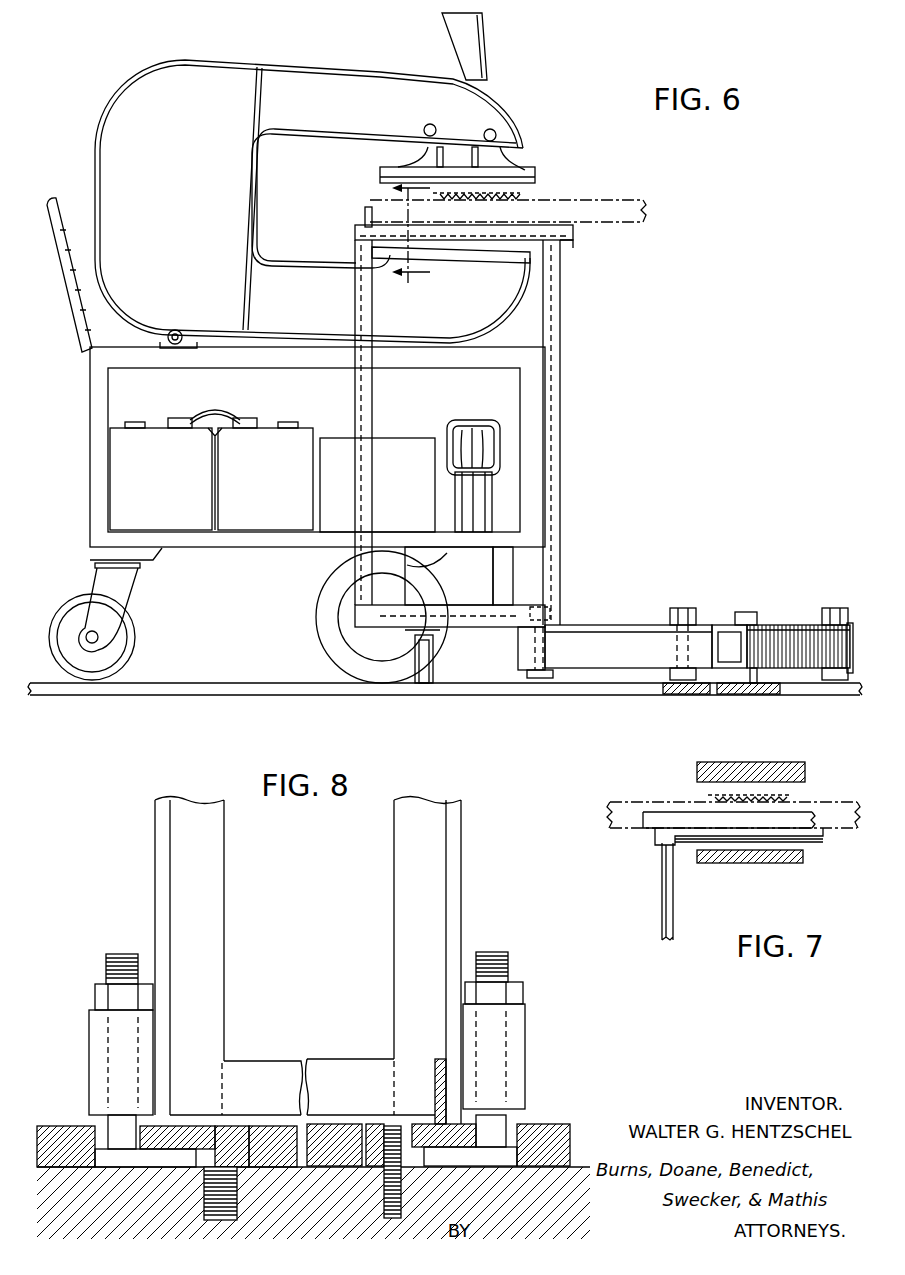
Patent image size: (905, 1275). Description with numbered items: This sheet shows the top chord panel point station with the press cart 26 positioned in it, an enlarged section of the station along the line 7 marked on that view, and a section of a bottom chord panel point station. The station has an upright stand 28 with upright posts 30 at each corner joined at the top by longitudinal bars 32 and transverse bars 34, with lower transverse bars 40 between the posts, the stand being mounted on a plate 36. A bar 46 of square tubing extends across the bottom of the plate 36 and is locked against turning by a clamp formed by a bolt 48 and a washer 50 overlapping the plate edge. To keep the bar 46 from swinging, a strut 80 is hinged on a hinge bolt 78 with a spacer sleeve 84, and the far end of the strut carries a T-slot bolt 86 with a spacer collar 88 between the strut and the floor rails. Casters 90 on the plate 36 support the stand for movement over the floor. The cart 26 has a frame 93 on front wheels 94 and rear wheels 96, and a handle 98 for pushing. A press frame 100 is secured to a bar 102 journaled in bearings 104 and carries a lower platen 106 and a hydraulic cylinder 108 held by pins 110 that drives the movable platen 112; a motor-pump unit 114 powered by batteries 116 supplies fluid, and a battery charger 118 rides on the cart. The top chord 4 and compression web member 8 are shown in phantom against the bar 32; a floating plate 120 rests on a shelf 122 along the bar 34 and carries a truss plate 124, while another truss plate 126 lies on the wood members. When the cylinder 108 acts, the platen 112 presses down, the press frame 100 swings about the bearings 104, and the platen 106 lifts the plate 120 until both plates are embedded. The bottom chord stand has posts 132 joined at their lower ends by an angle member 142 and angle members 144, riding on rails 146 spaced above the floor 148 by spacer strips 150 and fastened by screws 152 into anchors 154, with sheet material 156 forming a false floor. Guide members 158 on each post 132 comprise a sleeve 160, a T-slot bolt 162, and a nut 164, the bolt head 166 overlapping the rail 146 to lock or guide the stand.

In FIG. 6, the top chord 4 is at (385, 208).
In FIG. 7, the top chord 4 is at (667, 805).
In FIG. 6, the section line 7- 7 is at (398, 232).
In FIG. 6, the compression web member 8 is at (610, 200).
In FIG. 6, the cart 26 is at (90, 502).
In FIG. 6, the upright stand 28 is at (560, 415).
In FIG. 6, the upright posts 30 is at (357, 316).
In FIG. 7, the upright posts 30 is at (666, 892).
In FIG. 6, the longitudinal bars 32 is at (364, 212).
In FIG. 7, the longitudinal bars 32 is at (650, 815).
In FIG. 6, the transverse bars 34 is at (489, 229).
In FIG. 7, the transverse bars 34 is at (660, 838).
In FIG. 6, the plate 36 is at (604, 627).
In FIG. 6, the transverse bars 40 is at (470, 605).
In FIG. 6, the bar 46 is at (570, 645).
In FIG. 6, the bolt 48 is at (682, 607).
In FIG. 6, the washer 50 is at (668, 617).
In FIG. 6, the hinge bolt 78 is at (838, 610).
In FIG. 6, the strut 80 is at (790, 632).
In FIG. 6, the spacer sleeve 84 is at (847, 649).
In FIG. 6, the bolt 86 is at (745, 614).
In FIG. 6, the spacer collar 88 is at (755, 678).
In FIG. 6, the casters 90 is at (437, 652).
In FIG. 6, the frame 93 is at (272, 362).
In FIG. 6, the front wheels 94 is at (322, 603).
In FIG. 6, the rear wheels 96 is at (118, 645).
In FIG. 6, the handle 98 is at (64, 314).
In FIG. 6, the press frame 100 is at (207, 78).
In FIG. 6, the bar 102 is at (180, 333).
In FIG. 6, the bearings 104 is at (162, 343).
In FIG. 6, the lower platen 106 is at (463, 258).
In FIG. 7, the lower platen 106 is at (722, 862).
In FIG. 6, the hydraulic cylinder 108 is at (487, 54).
In FIG. 6, the pins 110 is at (486, 136).
In FIG. 6, the movable platen 112 is at (536, 181).
In FIG. 7, the movable platen 112 is at (700, 770).
In FIG. 6, the motor-pump unit 114 is at (486, 420).
In FIG. 6, the batteries 116 is at (230, 443).
In FIG. 6, the battery charger 118 is at (393, 447).
In FIG. 7, the floating plate 120 is at (810, 848).
In FIG. 7, the shelf 122 is at (665, 850).
In FIG. 7, the truss plate 124 is at (824, 840).
In FIG. 6, the truss plate 126 is at (522, 193).
In FIG. 7, the truss plate 126 is at (797, 797).
In FIG. 8, the upright posts 132 is at (207, 894).
In FIG. 8, the angle member 142 is at (435, 1064).
In FIG. 8, the angle members 144 is at (343, 1068).
In FIG. 8, the rails 146 is at (174, 1126).
In FIG. 8, the floor 148 is at (95, 1182).
In FIG. 8, the spacer strips 150 is at (202, 1150).
In FIG. 8, the screws 152 is at (230, 1130).
In FIG. 8, the anchors 154 is at (207, 1197).
In FIG. 8, the sheet material 156 is at (62, 1140).
In FIG. 8, the guide members 158 is at (88, 1072).
In FIG. 8, the sleeve 160 is at (90, 1035).
In FIG. 8, the T-slot bolt 162 is at (115, 954).
In FIG. 8, the nut 164 is at (94, 994).
In FIG. 8, the bolt head 166 is at (117, 1135).